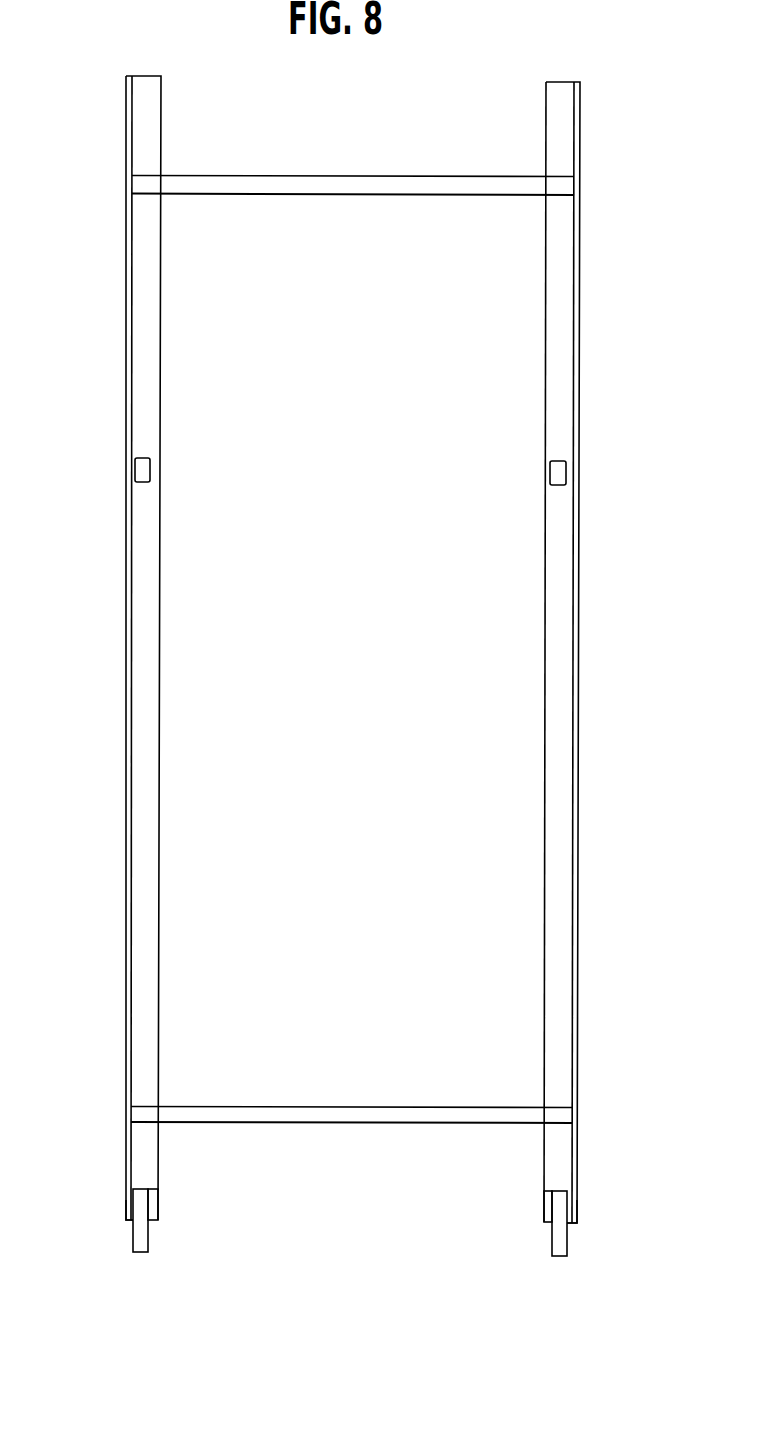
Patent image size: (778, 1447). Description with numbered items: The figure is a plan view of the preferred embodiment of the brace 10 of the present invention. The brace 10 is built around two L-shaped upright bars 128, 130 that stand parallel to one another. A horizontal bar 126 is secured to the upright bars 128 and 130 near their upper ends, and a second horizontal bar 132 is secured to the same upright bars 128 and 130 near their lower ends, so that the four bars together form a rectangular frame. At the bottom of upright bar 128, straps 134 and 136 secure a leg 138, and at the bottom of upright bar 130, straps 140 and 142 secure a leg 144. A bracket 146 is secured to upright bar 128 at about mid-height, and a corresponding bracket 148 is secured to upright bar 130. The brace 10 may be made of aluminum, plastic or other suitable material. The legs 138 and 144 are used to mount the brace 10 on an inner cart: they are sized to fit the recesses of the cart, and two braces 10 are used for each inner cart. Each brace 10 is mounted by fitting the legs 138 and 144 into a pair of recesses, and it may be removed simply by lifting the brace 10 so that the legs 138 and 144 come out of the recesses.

The brace 10 is at (100, 80).
The horizontal bar 126 is at (350, 176).
The upright bar 128 is at (578, 690).
The upright bar 130 is at (126, 720).
The horizontal bar 132 is at (371, 1107).
The strap 134 is at (573, 1225).
The strap 136 is at (545, 1205).
The leg 138 is at (563, 1245).
The strap 140 is at (126, 1222).
The strap 142 is at (152, 1203).
The leg 144 is at (143, 1239).
The bracket 146 is at (548, 473).
The bracket 148 is at (160, 468).